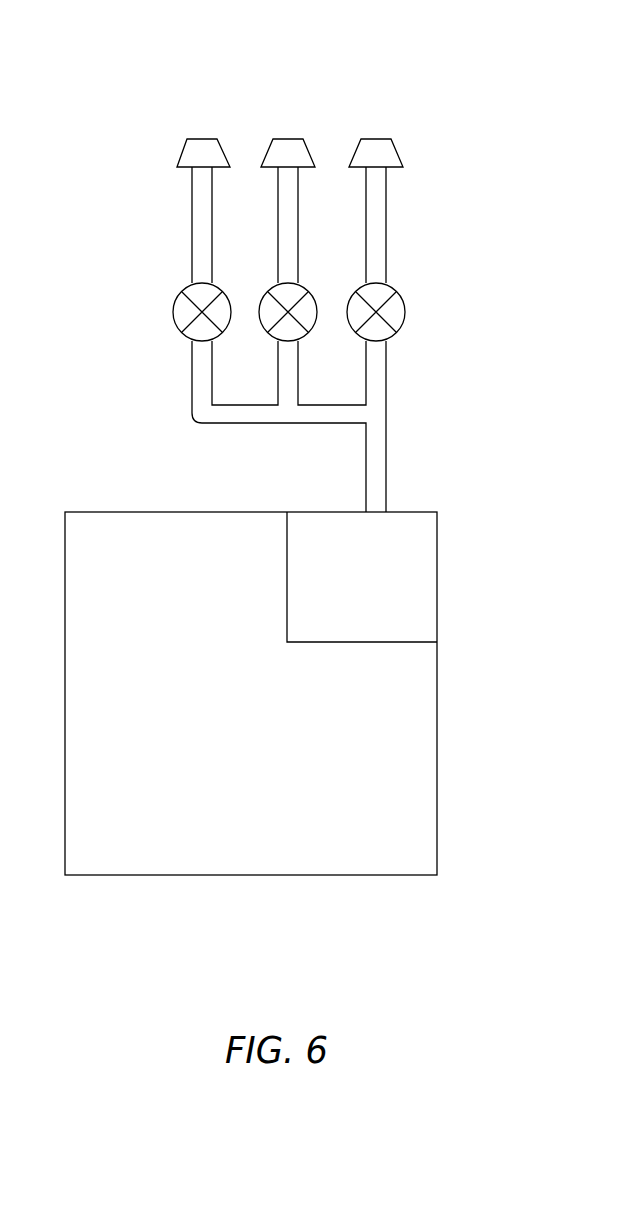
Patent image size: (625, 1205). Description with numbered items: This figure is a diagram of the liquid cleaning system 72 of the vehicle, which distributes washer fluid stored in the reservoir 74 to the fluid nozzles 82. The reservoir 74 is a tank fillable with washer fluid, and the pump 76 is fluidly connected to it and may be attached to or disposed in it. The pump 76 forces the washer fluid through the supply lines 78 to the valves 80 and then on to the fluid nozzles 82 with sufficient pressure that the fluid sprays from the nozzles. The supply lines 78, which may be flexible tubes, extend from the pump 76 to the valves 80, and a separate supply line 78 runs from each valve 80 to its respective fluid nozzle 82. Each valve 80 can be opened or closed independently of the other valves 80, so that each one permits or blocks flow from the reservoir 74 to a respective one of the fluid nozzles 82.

The liquid cleaning system 72 is at (462, 432).
The reservoir 74 is at (437, 813).
The pump 76 is at (438, 553).
The supply lines 78 is at (212, 188).
The valves 80 is at (358, 288).
The fluid nozzles 82 is at (377, 138).